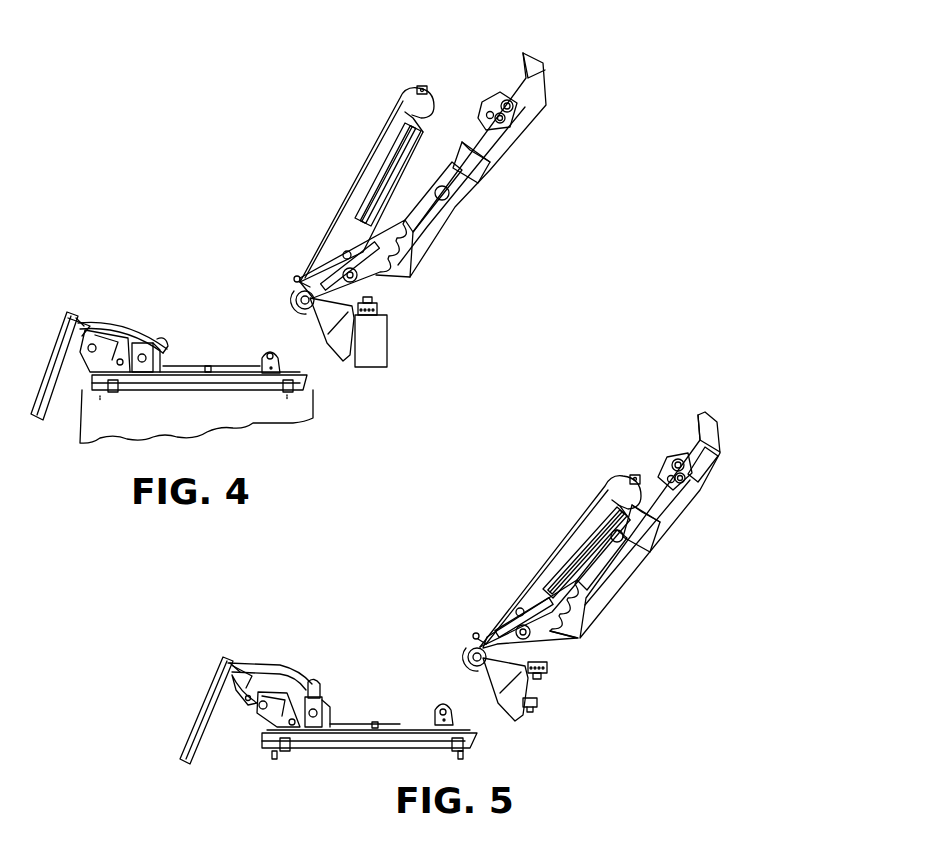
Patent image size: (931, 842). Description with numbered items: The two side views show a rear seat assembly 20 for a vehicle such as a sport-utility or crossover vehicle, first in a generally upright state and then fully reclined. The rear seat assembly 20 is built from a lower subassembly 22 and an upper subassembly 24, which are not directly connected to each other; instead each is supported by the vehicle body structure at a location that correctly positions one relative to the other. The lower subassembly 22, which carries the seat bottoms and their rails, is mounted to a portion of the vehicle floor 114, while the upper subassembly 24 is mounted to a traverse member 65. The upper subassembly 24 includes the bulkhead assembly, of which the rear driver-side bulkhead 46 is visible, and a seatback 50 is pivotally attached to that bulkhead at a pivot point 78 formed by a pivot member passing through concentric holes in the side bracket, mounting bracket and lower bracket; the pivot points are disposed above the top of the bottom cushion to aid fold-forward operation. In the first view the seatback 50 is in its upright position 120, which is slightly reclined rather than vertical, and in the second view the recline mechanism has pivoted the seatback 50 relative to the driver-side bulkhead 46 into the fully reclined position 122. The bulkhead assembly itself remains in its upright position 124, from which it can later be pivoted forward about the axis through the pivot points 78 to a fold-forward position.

In FIG. 4, the rear seat assembly 20 is at (327, 222).
In FIG. 5, the rear seat assembly 20 is at (486, 575).
In FIG. 4, the lower subassembly 22 is at (134, 328).
In FIG. 5, the lower subassembly 22 is at (284, 668).
In FIG. 4, the upper subassembly 24 is at (538, 78).
In FIG. 5, the upper subassembly 24 is at (712, 433).
In FIG. 5, the rear driver-side bulkhead 46 is at (678, 513).
In FIG. 4, the seatback 50 is at (392, 132).
In FIG. 5, the seatback 50 is at (585, 525).
In FIG. 4, the traverse member 65 is at (387, 343).
In FIG. 5, the pivot point 78 is at (465, 655).
In FIG. 4, the vehicle floor 114 is at (208, 422).
In FIG. 4, the upright position 120 is at (442, 208).
In FIG. 5, the fully reclined position 122 is at (593, 553).
In FIG. 4, the upright position of bulkhead assembly 124 is at (499, 151).